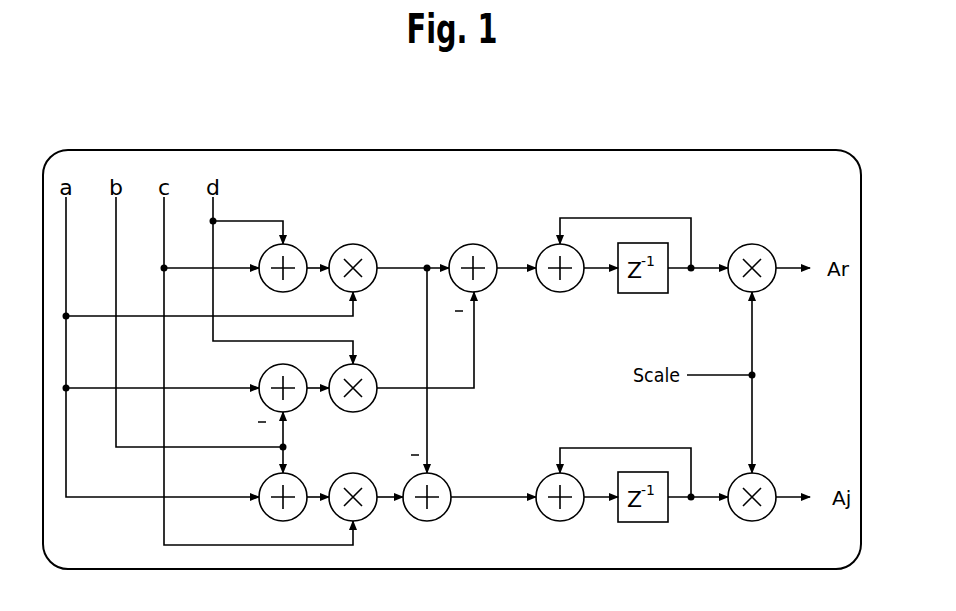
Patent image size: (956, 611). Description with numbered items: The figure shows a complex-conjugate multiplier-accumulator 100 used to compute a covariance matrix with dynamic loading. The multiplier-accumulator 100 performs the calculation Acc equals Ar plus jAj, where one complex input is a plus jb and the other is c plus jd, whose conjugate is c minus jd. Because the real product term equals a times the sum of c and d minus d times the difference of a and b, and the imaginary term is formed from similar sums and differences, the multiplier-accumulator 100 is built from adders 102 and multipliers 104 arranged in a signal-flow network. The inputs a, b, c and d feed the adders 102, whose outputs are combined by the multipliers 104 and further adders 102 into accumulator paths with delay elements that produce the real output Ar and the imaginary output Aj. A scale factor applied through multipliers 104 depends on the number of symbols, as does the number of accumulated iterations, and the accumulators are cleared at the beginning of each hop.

The complex-conjugate multiplier-accumulator 100 is at (447, 150).
The adders 102 is at (295, 245).
The multipliers 104 is at (360, 244).